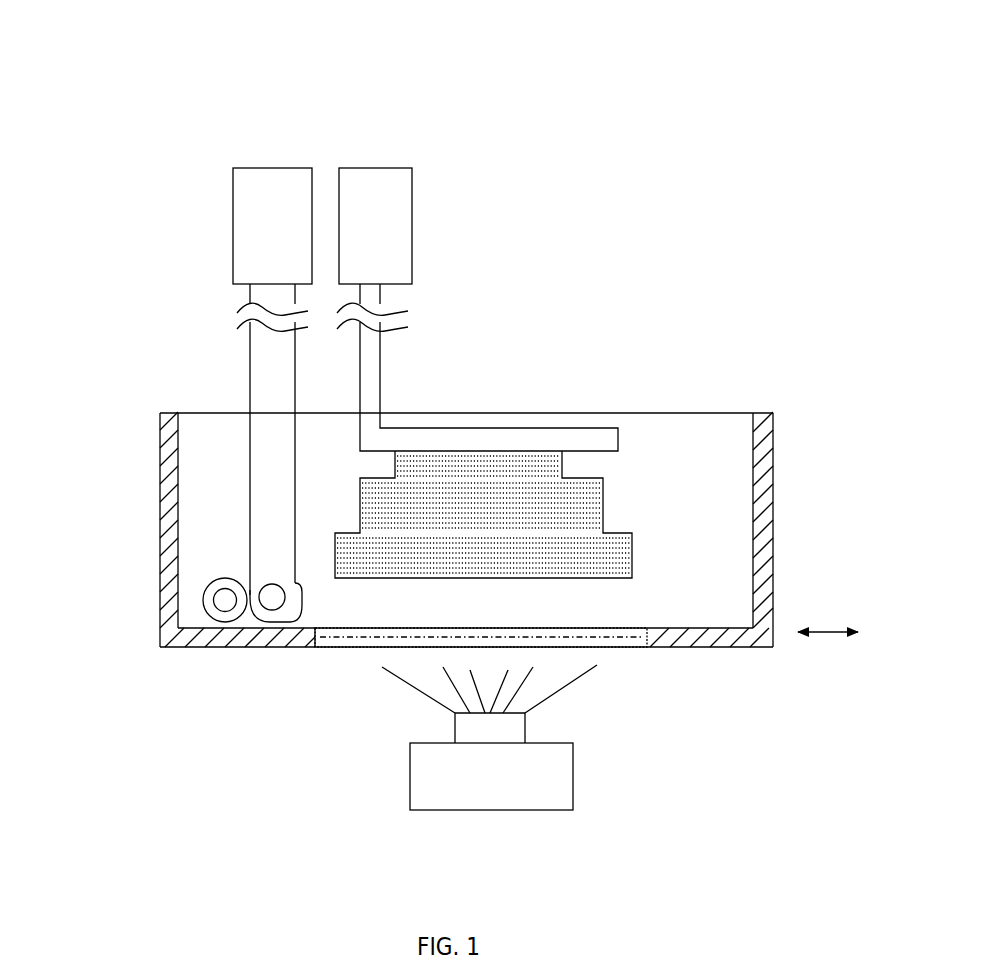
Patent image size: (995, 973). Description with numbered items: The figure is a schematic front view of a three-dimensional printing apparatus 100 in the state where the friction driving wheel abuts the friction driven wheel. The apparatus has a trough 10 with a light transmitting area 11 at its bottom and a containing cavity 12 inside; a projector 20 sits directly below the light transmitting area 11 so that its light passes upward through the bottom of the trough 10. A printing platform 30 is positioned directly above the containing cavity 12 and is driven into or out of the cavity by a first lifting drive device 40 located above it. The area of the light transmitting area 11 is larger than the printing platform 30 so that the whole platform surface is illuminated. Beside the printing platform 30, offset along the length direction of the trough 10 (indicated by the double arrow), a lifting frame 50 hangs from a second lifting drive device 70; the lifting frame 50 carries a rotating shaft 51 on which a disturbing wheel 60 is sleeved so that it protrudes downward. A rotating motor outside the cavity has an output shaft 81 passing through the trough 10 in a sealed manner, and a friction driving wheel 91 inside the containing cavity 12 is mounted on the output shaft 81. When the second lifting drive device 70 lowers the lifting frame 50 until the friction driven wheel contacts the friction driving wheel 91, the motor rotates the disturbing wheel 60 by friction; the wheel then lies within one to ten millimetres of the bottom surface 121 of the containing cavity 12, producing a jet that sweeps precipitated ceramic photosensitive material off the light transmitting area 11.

The three-dimensional (3D) printing apparatus 100 is at (108, 73).
The trough 10 is at (160, 435).
The light transmitting area 11 is at (630, 647).
The containing cavity 12 is at (732, 447).
The bottom surface 121 is at (700, 630).
The projector 20 is at (455, 790).
The printing platform 30 is at (473, 438).
The first lifting drive device 40 is at (395, 187).
The lifting frame 50 is at (247, 372).
The rotating shaft 51 is at (268, 592).
The disturbing wheel 60 is at (272, 615).
The second lifting drive device 70 is at (250, 198).
The output shaft 81 is at (215, 598).
The friction driving wheel 91 is at (210, 617).